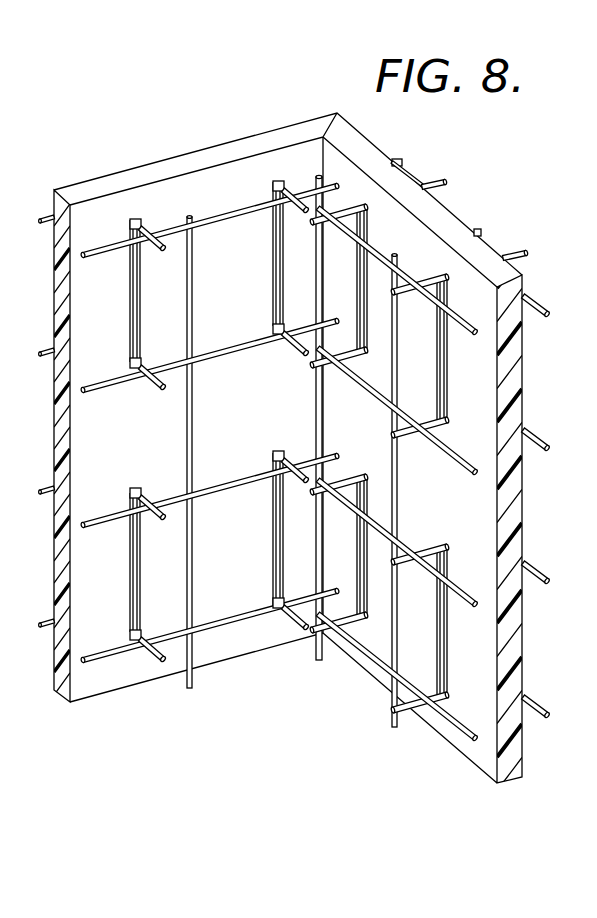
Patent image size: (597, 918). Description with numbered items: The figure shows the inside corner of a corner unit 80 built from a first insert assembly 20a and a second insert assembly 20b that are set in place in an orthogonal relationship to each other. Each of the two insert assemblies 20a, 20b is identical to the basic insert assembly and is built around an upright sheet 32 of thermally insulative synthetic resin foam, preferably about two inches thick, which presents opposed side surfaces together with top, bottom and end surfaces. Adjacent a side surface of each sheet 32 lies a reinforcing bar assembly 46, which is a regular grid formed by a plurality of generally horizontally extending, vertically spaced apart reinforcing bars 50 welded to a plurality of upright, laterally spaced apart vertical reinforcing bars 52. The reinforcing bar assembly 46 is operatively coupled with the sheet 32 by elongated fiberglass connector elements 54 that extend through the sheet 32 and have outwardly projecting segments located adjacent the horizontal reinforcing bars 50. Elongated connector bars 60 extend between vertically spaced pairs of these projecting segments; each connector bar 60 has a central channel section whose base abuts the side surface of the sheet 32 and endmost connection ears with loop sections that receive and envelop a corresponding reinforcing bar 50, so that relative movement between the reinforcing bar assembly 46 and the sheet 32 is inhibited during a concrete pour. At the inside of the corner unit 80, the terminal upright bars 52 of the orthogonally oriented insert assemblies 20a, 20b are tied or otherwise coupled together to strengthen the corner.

The corner unit 80 is at (298, 412).
The first insert assembly 20a is at (454, 207).
The second insert assembly 20b is at (255, 134).
The sheet 32 is at (114, 170).
The reinforcing bar assembly 46 is at (238, 628).
The horizontally extending reinforcing bars 50 is at (91, 518).
The vertical reinforcing bars 52 is at (481, 234).
The connector elements 54 is at (154, 664).
The connector bars 60 is at (267, 519).